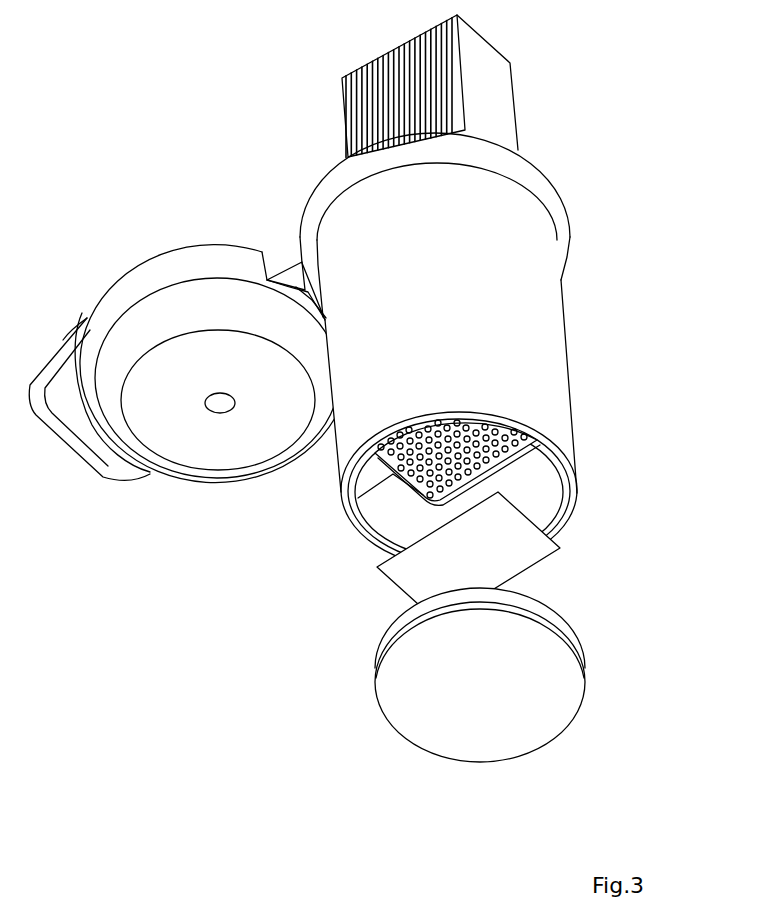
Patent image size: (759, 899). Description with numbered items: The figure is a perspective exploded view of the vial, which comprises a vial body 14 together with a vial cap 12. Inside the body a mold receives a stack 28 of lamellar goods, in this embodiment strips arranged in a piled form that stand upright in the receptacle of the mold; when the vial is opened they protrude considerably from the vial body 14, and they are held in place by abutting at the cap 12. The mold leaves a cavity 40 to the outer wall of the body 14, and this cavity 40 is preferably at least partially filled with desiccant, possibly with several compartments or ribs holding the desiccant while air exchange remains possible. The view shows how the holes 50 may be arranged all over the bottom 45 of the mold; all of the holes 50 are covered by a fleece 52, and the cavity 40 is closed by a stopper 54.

The vial cap 12 is at (137, 428).
The vial body 14 is at (545, 350).
The stack of lamellar goods 28 is at (490, 98).
The cavity 40 is at (540, 497).
The bottom of mold 45 is at (385, 441).
The holes 50 is at (357, 503).
The fleece 52 is at (513, 558).
The stopper 54 is at (497, 733).